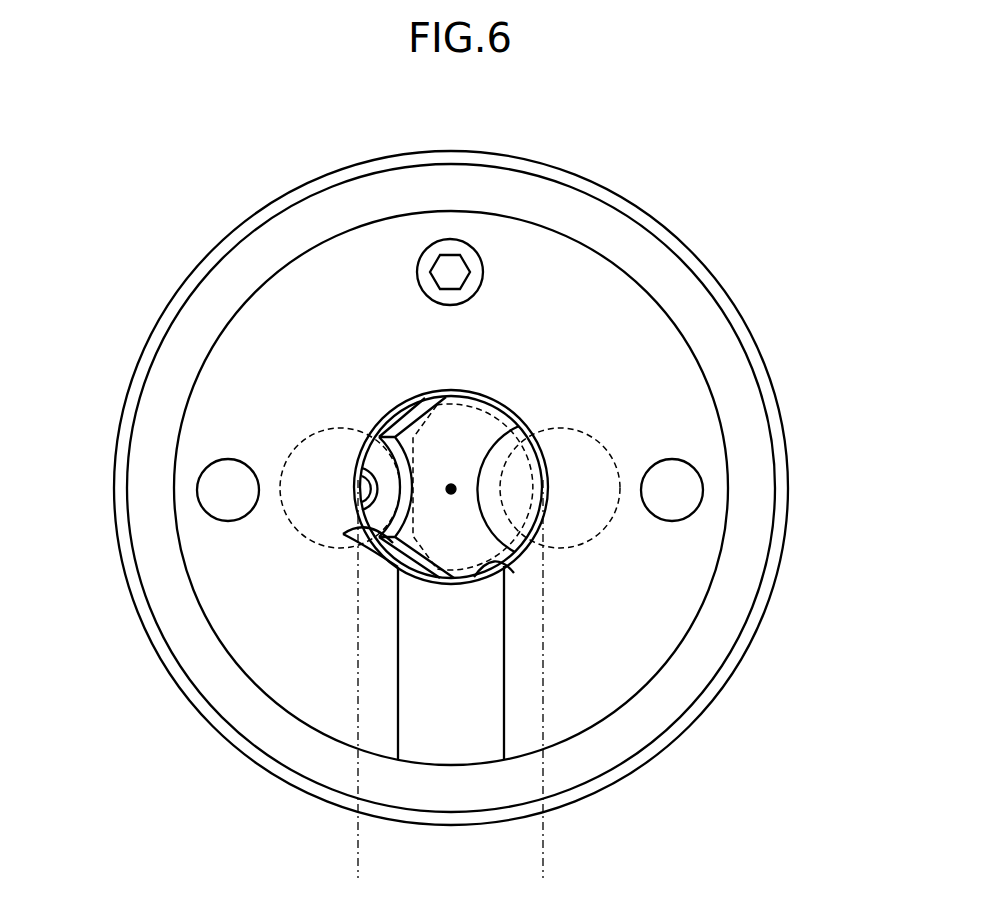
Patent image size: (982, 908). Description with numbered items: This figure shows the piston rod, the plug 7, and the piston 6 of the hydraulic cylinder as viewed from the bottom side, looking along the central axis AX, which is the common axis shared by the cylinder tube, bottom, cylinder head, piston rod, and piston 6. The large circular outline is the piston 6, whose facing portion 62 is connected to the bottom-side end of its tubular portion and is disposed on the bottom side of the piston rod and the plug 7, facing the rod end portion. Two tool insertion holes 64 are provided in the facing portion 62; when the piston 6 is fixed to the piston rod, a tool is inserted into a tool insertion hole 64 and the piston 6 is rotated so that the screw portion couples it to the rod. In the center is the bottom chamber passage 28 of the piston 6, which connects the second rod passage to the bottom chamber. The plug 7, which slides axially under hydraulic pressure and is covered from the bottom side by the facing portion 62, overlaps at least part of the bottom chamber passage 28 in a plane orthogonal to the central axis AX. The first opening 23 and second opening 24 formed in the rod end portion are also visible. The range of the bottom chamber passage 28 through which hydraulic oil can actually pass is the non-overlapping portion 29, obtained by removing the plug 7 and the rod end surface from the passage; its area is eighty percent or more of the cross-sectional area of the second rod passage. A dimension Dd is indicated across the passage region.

The piston 6 is at (730, 378).
The facing portion 62 is at (705, 438).
The tool insertion hole 64 is at (212, 492).
The non-overlapping portion 29 is at (491, 393).
The central axis AX is at (452, 488).
The plug 7 is at (383, 455).
The bottom chamber passage 28 is at (507, 563).
The second opening 24 is at (510, 528).
The first opening 23 is at (353, 534).
The dimension Dd is at (543, 862).